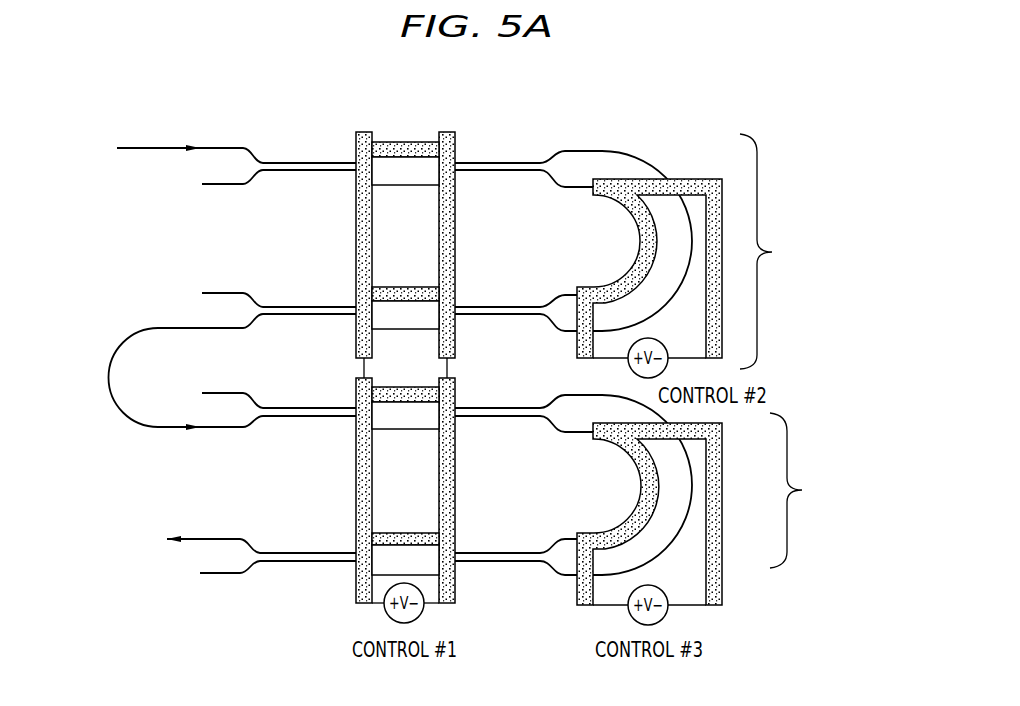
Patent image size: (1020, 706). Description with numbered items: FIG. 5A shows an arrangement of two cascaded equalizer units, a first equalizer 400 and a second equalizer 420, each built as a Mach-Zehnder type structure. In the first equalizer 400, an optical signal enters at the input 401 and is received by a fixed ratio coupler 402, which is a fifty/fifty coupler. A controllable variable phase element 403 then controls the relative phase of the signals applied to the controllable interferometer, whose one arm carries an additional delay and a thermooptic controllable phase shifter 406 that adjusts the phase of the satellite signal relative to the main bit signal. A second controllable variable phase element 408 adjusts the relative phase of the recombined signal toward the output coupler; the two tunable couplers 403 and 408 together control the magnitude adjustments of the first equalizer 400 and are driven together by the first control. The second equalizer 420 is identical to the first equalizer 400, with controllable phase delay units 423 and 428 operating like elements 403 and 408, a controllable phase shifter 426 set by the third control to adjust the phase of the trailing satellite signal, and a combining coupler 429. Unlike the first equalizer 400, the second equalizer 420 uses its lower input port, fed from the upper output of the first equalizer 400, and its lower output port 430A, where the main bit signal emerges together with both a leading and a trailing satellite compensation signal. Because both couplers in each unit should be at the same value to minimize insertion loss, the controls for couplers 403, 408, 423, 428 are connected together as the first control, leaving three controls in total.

The first equalizer 400 is at (776, 251).
The input 401 is at (153, 150).
The fixed ratio coupler 402 is at (302, 173).
The controllable variable phase element 403 is at (404, 141).
The controllable phase shifter 406 is at (626, 208).
The controllable variable phase element 408 is at (403, 286).
The second equalizer 420 is at (806, 490).
The controllable phase delay unit 423 is at (378, 386).
The controllable phase shifter 426 is at (639, 487).
The controllable phase delay unit 428 is at (403, 532).
The coupler of second equalizer 429 is at (302, 562).
The lower output port 430A is at (191, 538).